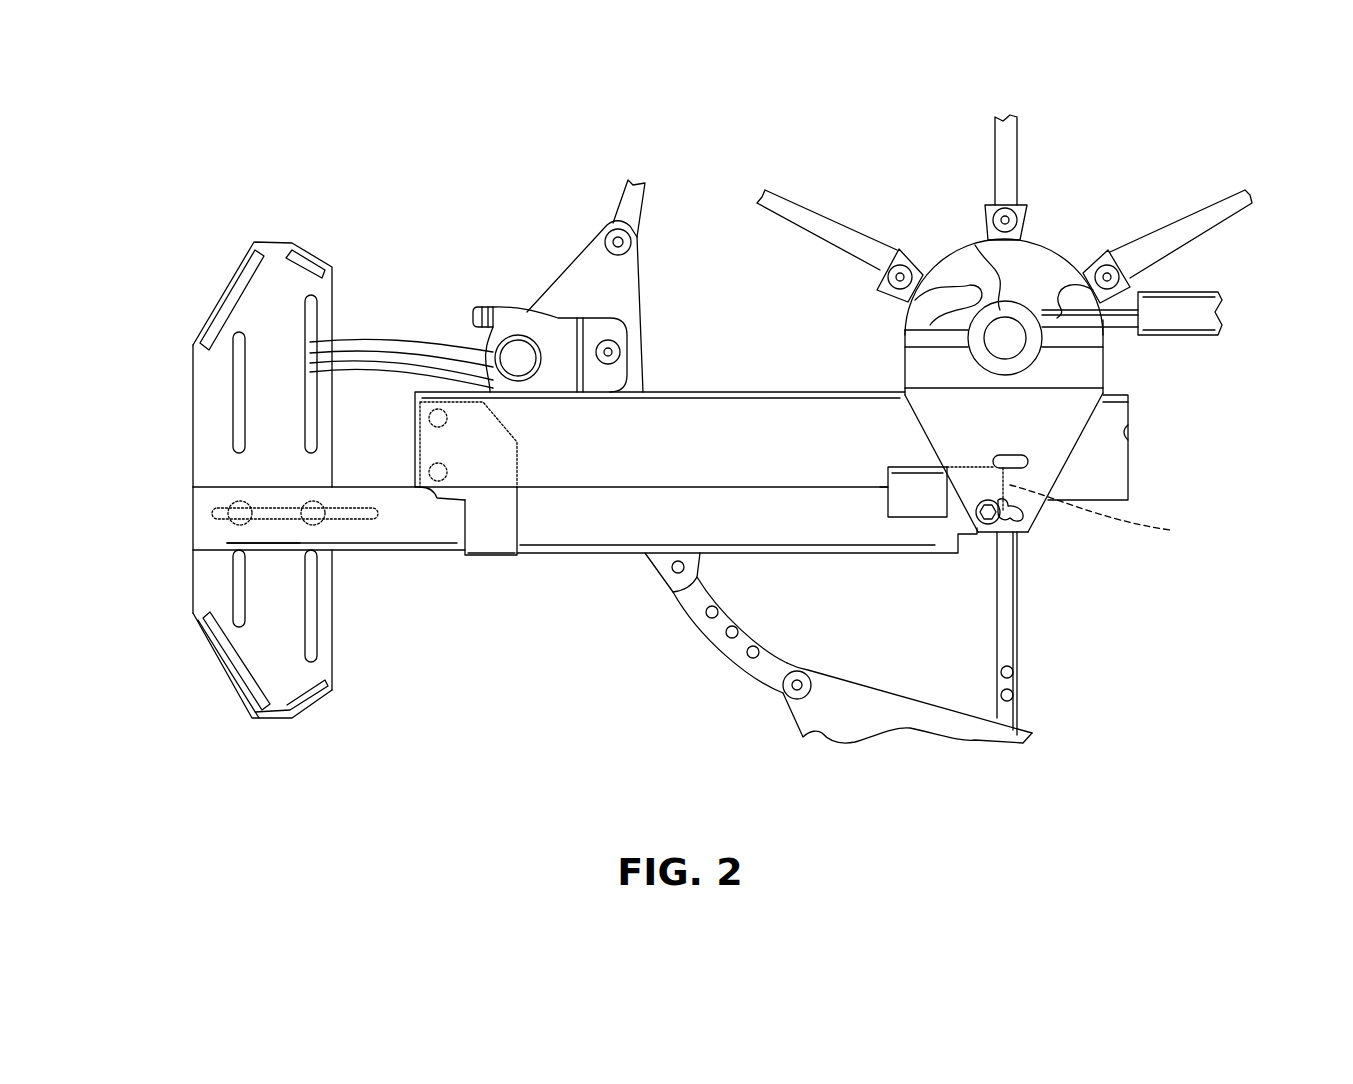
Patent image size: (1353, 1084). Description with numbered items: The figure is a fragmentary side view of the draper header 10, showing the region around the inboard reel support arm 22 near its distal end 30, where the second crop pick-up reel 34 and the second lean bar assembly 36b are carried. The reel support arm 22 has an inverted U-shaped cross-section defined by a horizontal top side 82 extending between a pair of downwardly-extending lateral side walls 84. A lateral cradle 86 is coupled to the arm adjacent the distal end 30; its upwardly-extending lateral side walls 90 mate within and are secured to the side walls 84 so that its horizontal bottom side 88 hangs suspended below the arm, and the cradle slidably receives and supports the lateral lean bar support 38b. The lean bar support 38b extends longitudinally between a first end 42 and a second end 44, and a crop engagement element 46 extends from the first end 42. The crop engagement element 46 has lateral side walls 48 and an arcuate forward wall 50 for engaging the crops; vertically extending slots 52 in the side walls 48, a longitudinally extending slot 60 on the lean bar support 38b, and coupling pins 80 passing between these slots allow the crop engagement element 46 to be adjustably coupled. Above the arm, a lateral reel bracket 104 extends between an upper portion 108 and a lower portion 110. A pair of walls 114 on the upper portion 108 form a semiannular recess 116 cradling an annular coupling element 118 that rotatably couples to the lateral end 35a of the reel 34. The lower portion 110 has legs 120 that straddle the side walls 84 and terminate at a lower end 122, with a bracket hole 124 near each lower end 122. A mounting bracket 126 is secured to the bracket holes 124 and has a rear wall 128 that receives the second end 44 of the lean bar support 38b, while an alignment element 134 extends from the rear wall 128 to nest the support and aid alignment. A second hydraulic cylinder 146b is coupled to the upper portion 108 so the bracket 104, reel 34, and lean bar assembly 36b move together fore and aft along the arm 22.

The draper header 10 is at (490, 186).
The inboard reel support arm 22 is at (430, 596).
The distal end 30 is at (420, 390).
The second crop pick-up reel 34 is at (825, 770).
The lateral end 35a is at (1043, 243).
The second lean bar assembly 36b is at (198, 680).
The lateral lean bar support 38b is at (402, 540).
The first end 42 is at (205, 530).
The second end 44 is at (935, 540).
The crop engagement element 46 is at (270, 735).
The lateral side walls 48 is at (267, 268).
The arcuate forward wall 50 is at (198, 367).
The vertically extending slots 52 is at (240, 330).
The longitudinally extending slot 60 is at (208, 511).
The coupling pins 80 is at (237, 522).
The horizontal top side 82 is at (468, 392).
The lateral side walls 84 is at (672, 445).
The lateral cradle 86 is at (552, 570).
The horizontal bottom side 88 is at (487, 556).
The lateral side walls 90 is at (502, 533).
The lateral reel bracket 104 is at (1078, 474).
The upper portion 108 is at (1145, 373).
The lower portion 110 is at (1110, 430).
The walls 114 is at (1095, 360).
The semiannular recess 116 is at (1095, 374).
The annular coupling element 118 is at (975, 245).
The legs 120 is at (1024, 421).
The lower end 122 is at (1040, 512).
The bracket hole 124 is at (1035, 530).
The mounting bracket 126 is at (898, 442).
The rear wall 128 is at (1115, 511).
The alignment element 134 is at (937, 503).
The second hydraulic cylinder 146b is at (1188, 272).